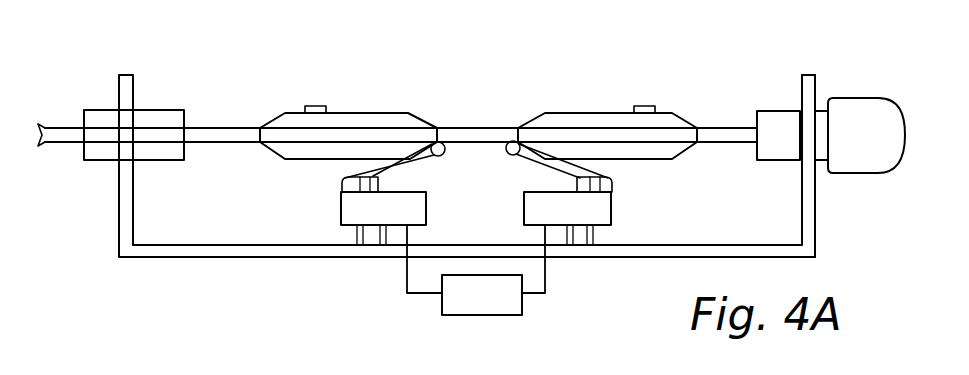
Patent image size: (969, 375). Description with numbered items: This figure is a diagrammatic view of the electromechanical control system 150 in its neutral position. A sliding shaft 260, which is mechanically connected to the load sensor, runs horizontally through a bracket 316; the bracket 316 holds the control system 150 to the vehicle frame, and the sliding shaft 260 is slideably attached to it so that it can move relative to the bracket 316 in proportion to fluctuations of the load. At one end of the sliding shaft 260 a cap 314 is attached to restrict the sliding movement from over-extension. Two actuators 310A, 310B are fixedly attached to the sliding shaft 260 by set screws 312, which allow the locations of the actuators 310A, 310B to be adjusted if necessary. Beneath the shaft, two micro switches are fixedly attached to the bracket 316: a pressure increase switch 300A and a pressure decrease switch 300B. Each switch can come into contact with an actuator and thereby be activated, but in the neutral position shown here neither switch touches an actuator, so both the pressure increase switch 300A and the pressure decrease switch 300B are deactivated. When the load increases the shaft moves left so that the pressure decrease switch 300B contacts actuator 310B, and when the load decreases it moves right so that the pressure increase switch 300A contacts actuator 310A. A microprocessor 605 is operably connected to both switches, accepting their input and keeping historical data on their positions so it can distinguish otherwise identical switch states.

The control system 150 is at (166, 57).
The sliding shaft 260 is at (208, 143).
The actuator 310A is at (350, 113).
The actuator 310B is at (568, 113).
The set screw 312 is at (315, 106).
The cap 314 is at (847, 98).
The bracket 316 is at (815, 197).
The pressure increase switch 300A is at (340, 213).
The pressure decrease switch 300B is at (613, 212).
The microprocessor 605 is at (523, 309).